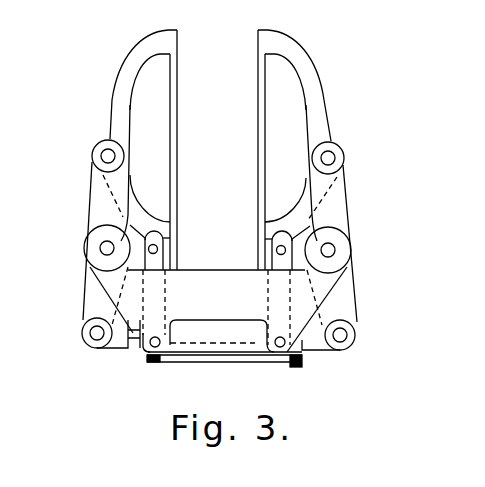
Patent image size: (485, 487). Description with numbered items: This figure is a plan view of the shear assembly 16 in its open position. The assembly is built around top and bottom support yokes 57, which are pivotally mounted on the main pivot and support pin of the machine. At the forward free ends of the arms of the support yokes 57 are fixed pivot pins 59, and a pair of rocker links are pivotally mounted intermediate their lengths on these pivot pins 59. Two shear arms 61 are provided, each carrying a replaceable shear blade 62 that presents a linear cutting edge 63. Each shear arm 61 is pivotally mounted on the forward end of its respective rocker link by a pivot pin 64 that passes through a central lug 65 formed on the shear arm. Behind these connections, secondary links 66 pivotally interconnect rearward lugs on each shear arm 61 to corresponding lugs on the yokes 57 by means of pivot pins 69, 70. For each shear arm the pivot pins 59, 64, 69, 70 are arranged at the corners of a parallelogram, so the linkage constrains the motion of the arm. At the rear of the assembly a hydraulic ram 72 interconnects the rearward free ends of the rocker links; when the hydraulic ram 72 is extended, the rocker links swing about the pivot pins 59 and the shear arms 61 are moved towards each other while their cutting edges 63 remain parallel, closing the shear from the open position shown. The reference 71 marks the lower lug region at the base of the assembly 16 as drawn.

The shear assembly 16 is at (367, 131).
The support yoke 57 is at (302, 306).
The pivot pin 59 is at (105, 248).
The shear arm 61 is at (118, 78).
The shear blade 62 is at (162, 80).
The cutting edge 63 is at (177, 155).
The pivot pin 64 is at (108, 157).
The central lug 65 is at (333, 141).
The secondary link 66 is at (158, 263).
The pivot pin 69 is at (165, 246).
The pivot pin 70 is at (280, 350).
The lower lug 71 is at (97, 340).
The hydraulic ram 72 is at (222, 353).